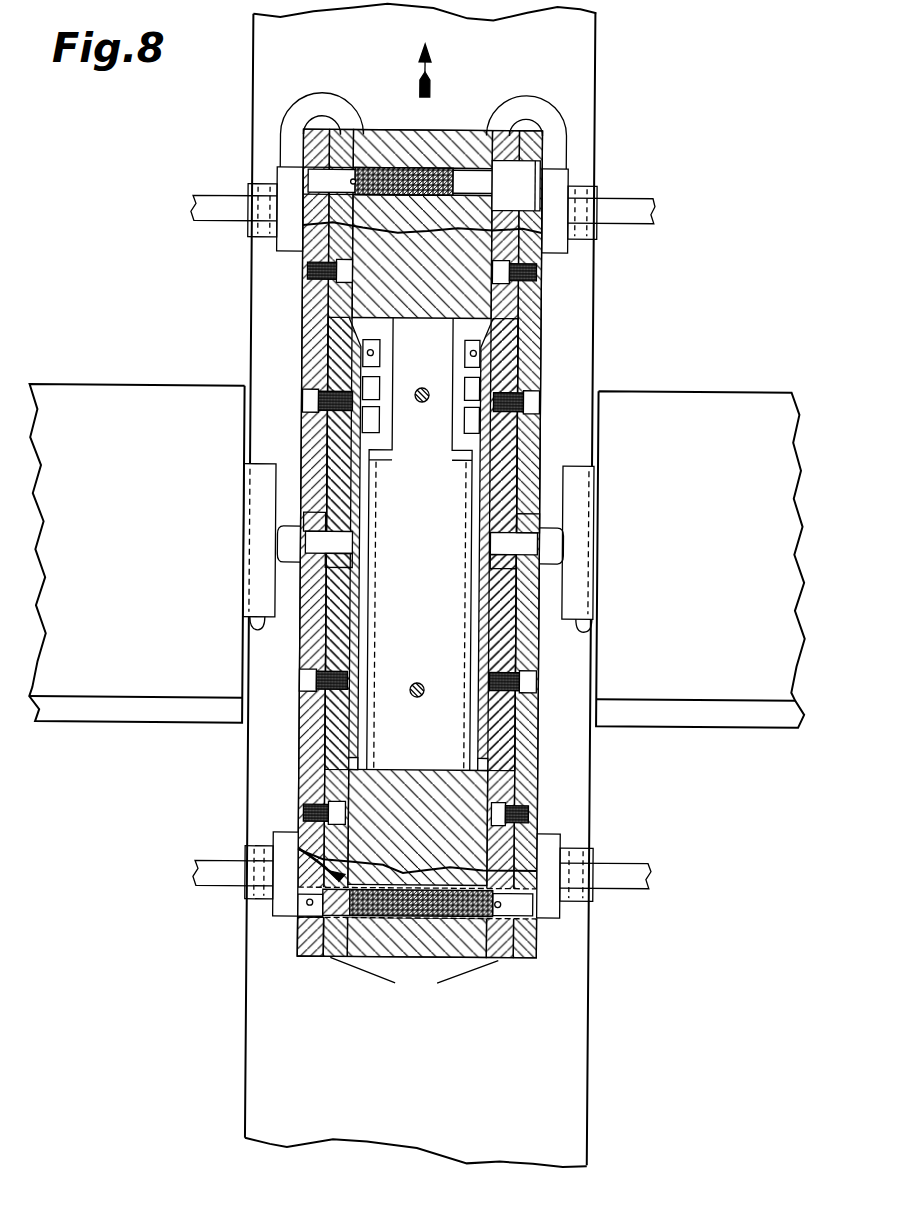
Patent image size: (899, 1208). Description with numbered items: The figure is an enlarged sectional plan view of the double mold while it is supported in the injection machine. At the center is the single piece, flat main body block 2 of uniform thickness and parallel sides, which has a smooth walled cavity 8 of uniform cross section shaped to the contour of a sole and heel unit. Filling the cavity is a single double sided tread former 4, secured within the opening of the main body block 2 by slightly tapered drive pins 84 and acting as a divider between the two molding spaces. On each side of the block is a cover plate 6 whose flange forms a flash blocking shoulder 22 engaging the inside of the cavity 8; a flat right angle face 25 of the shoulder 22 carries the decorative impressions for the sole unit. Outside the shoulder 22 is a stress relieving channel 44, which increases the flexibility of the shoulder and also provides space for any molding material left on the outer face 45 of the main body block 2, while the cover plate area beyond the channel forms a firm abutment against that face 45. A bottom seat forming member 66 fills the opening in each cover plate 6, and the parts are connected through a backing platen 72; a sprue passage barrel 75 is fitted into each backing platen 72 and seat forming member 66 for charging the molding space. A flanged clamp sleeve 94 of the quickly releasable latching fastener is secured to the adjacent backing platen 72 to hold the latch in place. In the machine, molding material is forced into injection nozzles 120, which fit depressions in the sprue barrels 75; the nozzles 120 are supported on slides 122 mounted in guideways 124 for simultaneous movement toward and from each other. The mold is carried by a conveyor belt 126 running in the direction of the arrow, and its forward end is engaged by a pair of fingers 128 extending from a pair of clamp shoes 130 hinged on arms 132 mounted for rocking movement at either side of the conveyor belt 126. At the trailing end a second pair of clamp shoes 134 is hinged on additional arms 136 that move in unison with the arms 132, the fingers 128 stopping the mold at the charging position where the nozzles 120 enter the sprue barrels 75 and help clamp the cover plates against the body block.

The main body block 2 is at (302, 797).
The tread former 4 is at (401, 748).
The cover plate 6 is at (414, 957).
The cavity 8 is at (308, 343).
The flash blocking shoulder 22 is at (497, 312).
The flat right angle face 25 is at (489, 317).
The stress relieving channel 44 is at (345, 310).
The outer face 45 is at (307, 253).
The bottom seat forming member 66 is at (305, 630).
The backing platen 72 is at (299, 777).
The sprue passage barrel 75 is at (300, 564).
The drive pins 84 is at (420, 402).
The flanged clamp sleeve 94 is at (535, 162).
The injection nozzles 120 is at (287, 529).
The slides 122 is at (245, 630).
The guideways 124 is at (103, 387).
The conveyor belt 126 is at (249, 1049).
The fingers 128 is at (488, 125).
The clamp shoes 130 is at (284, 193).
The arms 132 is at (234, 219).
The second pair of clamp shoes 134 is at (285, 909).
The additional arms 136 is at (227, 882).